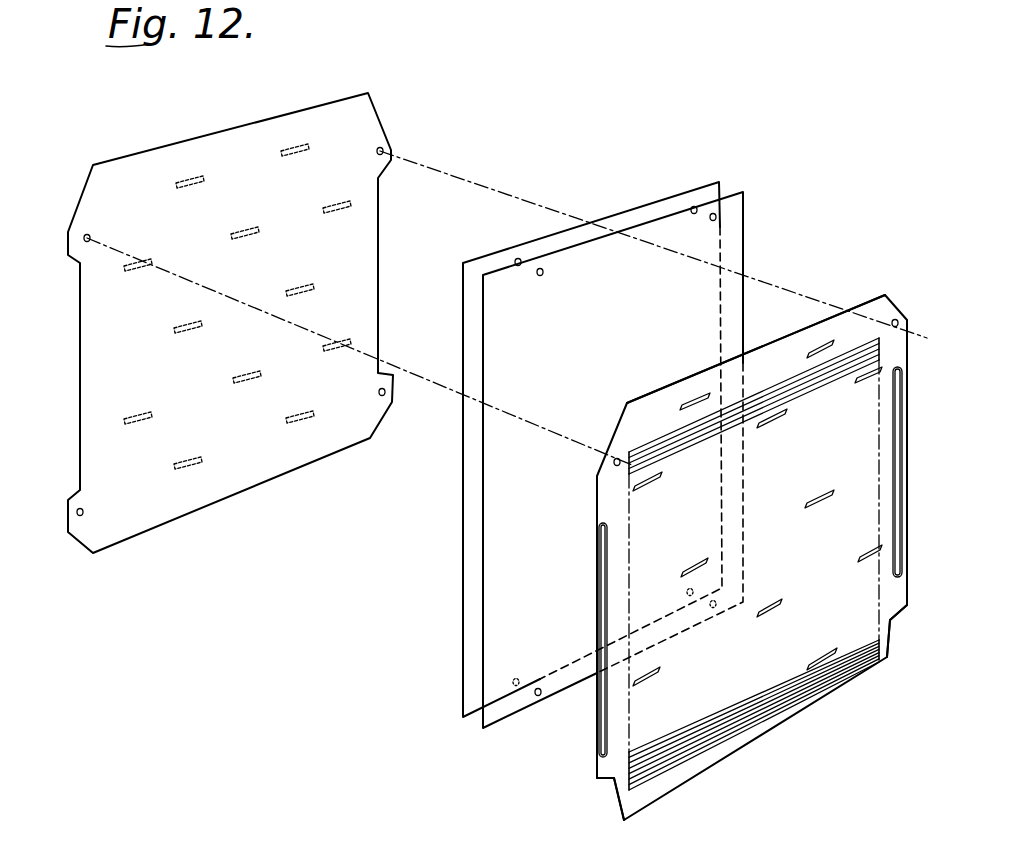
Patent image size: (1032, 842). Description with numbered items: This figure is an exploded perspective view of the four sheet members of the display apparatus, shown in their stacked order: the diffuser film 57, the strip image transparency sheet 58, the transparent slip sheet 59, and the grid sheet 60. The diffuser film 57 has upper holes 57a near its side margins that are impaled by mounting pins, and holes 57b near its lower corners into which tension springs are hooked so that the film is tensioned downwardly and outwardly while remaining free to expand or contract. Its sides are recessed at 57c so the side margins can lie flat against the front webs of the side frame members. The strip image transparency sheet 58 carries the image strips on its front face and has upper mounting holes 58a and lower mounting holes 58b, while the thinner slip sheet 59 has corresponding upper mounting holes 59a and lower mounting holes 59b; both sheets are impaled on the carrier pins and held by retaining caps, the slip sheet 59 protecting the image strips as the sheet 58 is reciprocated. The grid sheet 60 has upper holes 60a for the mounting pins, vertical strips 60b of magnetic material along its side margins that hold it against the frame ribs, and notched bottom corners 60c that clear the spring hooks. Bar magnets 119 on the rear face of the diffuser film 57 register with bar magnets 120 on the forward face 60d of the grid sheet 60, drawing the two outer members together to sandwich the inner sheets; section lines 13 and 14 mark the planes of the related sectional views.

The diffuser film 57 is at (246, 128).
The upper holes 57a is at (88, 233).
The holes 57b is at (79, 515).
The recesses 57c is at (380, 176).
The bar magnets 119 is at (297, 154).
The strip image transparency sheet 58 is at (627, 213).
The upper mounting holes 58a is at (519, 259).
The lower mounting holes 58b is at (517, 679).
The transparent slip sheet 59 is at (745, 253).
The upper mounting holes 59a is at (541, 276).
The lower mounting holes 59b is at (538, 696).
The grid sheet 60 is at (814, 700).
The upper holes 60a is at (615, 466).
The vertical strips of magnetic material 60b is at (603, 725).
The notched bottom corners 60c is at (612, 784).
The forward face 60d is at (670, 393).
The bar magnets 120 is at (768, 420).
The section line of FIG. 13 is at (788, 597).
The section line of FIG. 14 is at (928, 492).